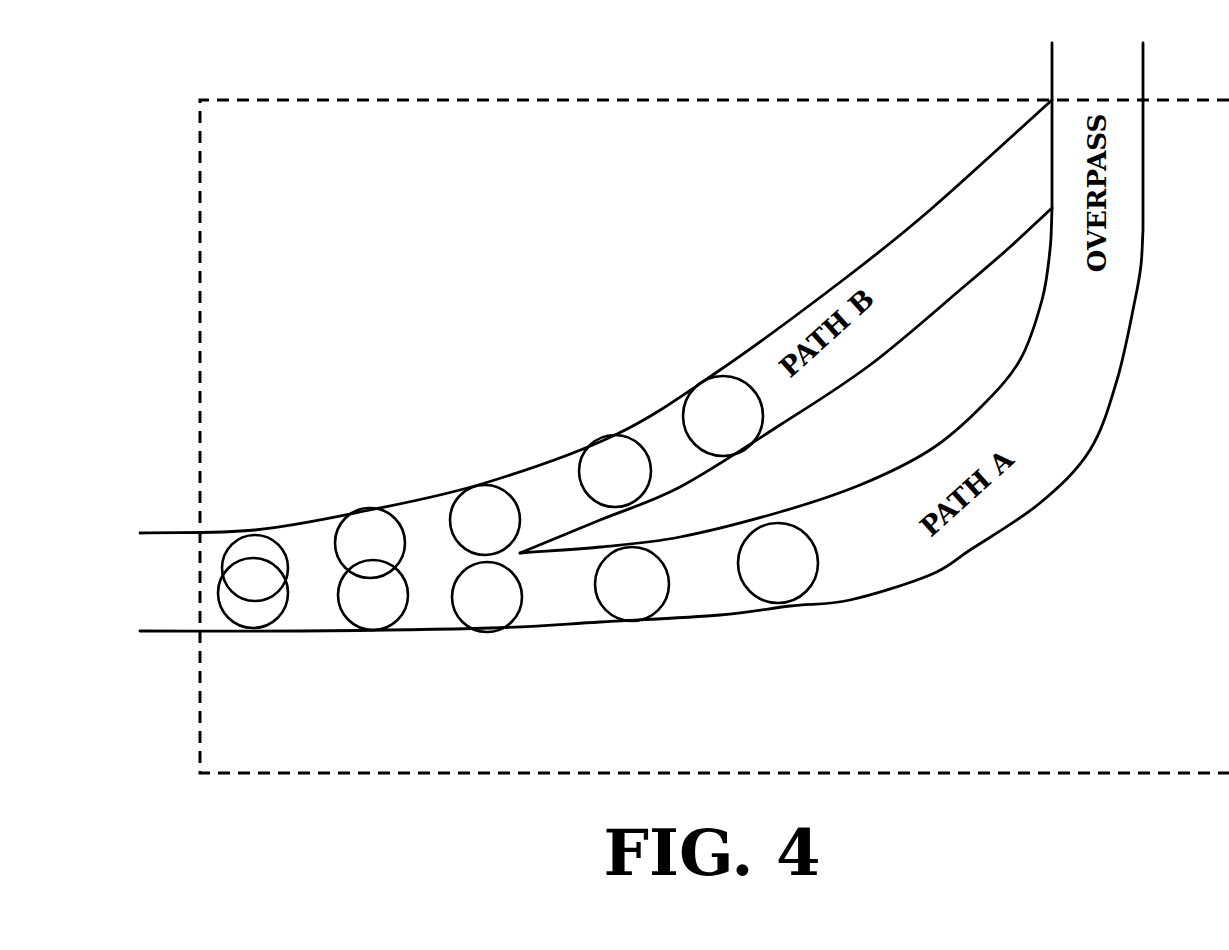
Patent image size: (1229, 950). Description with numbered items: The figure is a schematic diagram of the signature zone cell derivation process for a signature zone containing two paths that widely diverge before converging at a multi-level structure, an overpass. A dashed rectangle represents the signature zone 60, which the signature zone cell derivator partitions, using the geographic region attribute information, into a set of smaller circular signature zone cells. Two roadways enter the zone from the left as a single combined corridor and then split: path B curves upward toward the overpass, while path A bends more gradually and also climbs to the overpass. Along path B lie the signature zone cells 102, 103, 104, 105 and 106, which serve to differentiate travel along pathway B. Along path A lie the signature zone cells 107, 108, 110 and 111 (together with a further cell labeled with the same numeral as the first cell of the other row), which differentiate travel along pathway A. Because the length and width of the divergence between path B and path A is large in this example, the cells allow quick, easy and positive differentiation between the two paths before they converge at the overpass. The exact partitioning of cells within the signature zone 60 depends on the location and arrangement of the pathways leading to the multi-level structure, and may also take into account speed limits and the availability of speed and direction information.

The signature zone 60 is at (714, 436).
The signature zone cell 102 is at (255, 533).
The signature zone cell 103 is at (370, 509).
The signature zone cell 104 is at (477, 483).
The signature zone cell 105 is at (600, 435).
The signature zone cell 106 is at (707, 375).
The signature zone cell 107 is at (257, 632).
The signature zone cell 108 is at (377, 632).
The signature zone cell 110 is at (647, 621).
The signature zone cell 111 is at (790, 603).